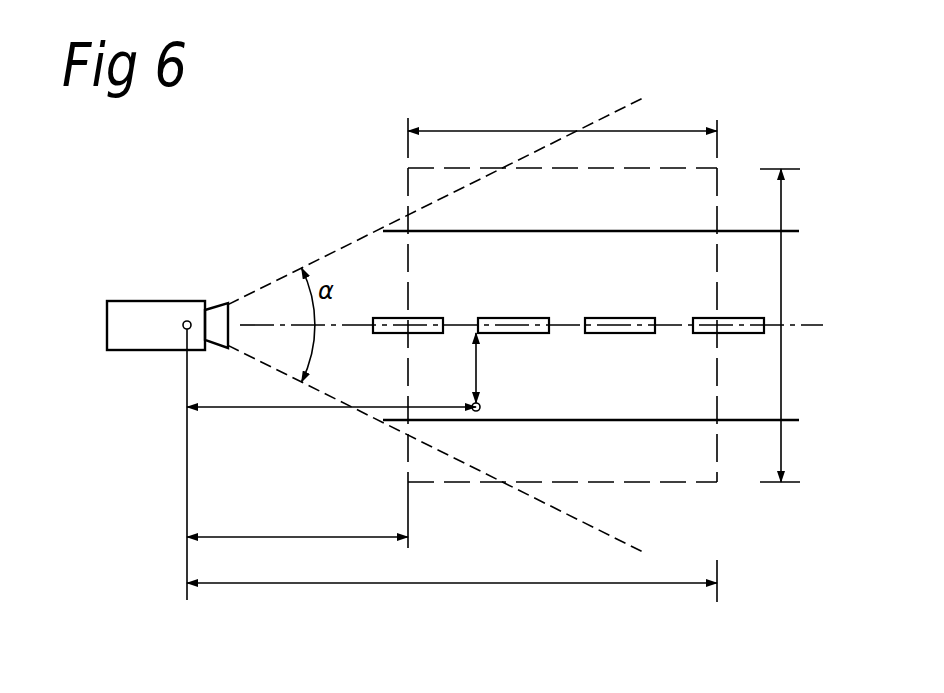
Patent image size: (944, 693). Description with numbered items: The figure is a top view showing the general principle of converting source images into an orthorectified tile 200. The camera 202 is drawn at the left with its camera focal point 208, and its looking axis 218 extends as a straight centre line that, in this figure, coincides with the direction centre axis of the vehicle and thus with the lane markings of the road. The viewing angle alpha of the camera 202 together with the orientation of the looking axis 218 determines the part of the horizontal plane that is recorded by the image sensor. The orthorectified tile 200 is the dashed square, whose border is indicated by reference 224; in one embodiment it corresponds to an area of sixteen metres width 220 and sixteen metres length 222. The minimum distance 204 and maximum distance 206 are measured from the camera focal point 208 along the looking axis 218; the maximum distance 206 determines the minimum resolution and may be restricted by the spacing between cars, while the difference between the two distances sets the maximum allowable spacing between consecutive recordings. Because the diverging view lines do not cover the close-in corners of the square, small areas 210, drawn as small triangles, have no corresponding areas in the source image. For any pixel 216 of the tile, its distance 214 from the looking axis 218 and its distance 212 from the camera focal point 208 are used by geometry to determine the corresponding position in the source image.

The orthorectified tile 200 is at (708, 188).
The camera 202 is at (124, 310).
The minimum distance 204 is at (233, 537).
The maximum distance 206 is at (452, 583).
The camera focal point 208 is at (186, 320).
The small areas 210 is at (421, 188).
The horizontal distance to reference point 212 is at (240, 410).
The distance from the looking axis 214 is at (476, 365).
The pixel 216 is at (479, 411).
The looking axis 218 is at (800, 326).
The width 220 is at (781, 200).
The length 222 is at (430, 131).
The border of the orthorectified tile 224 is at (717, 443).